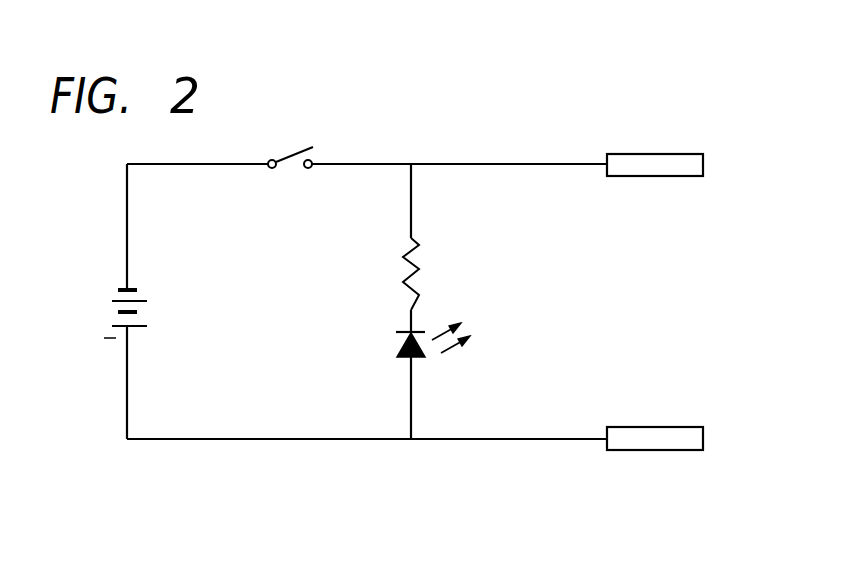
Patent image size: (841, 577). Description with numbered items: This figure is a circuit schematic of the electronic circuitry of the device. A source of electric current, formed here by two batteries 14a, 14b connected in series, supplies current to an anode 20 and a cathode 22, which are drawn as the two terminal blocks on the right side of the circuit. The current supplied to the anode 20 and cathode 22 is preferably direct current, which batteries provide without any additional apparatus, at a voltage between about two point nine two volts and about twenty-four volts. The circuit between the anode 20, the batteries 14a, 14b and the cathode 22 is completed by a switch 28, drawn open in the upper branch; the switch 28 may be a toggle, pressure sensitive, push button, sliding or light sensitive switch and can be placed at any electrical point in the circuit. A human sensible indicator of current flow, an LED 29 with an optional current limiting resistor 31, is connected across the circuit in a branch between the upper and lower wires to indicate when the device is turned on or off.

The switch 28 is at (292, 158).
The anode 20 is at (655, 153).
The cathode 22 is at (655, 451).
The battery 14a is at (113, 300).
The battery 14b is at (113, 327).
The current limiting resistor 31 is at (402, 280).
The LED 29 is at (397, 354).